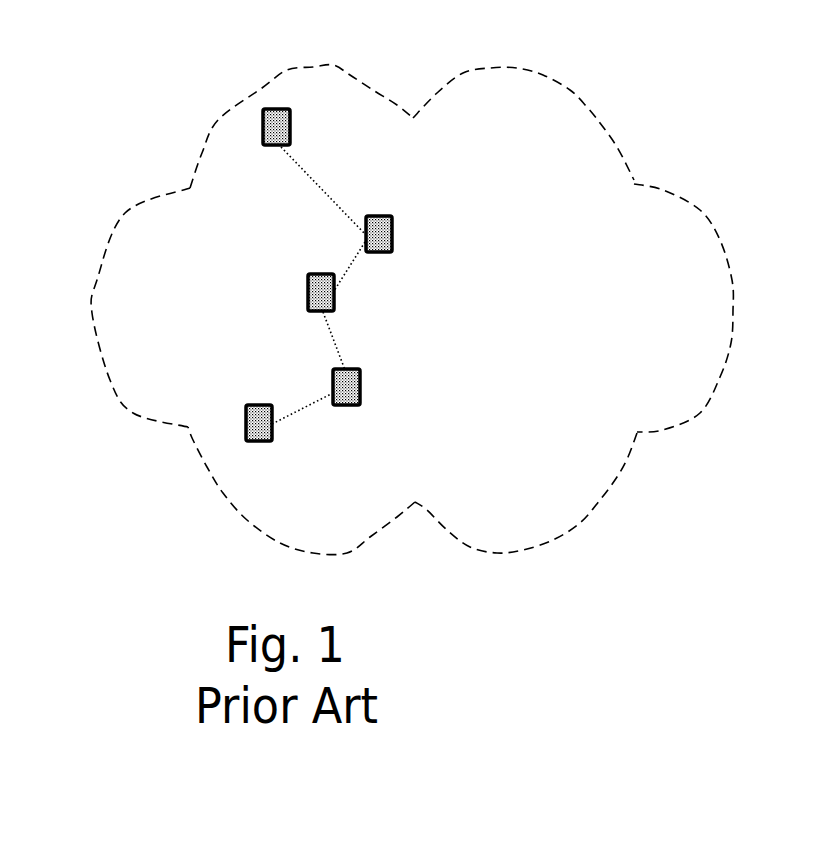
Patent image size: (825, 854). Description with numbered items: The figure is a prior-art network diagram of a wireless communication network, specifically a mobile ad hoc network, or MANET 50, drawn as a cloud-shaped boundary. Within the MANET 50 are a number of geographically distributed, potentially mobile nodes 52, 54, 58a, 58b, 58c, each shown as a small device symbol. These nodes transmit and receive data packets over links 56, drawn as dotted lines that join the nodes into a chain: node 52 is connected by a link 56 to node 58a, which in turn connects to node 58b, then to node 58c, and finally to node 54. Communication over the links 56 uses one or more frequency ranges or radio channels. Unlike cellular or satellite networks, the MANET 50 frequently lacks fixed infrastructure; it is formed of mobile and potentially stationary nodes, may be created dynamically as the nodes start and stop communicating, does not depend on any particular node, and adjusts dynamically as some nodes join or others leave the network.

The MANET 50 is at (634, 180).
The node 52 is at (291, 127).
The node 54 is at (245, 422).
The links 56 is at (333, 196).
The node 58a is at (393, 225).
The node 58b is at (308, 297).
The node 58c is at (361, 389).